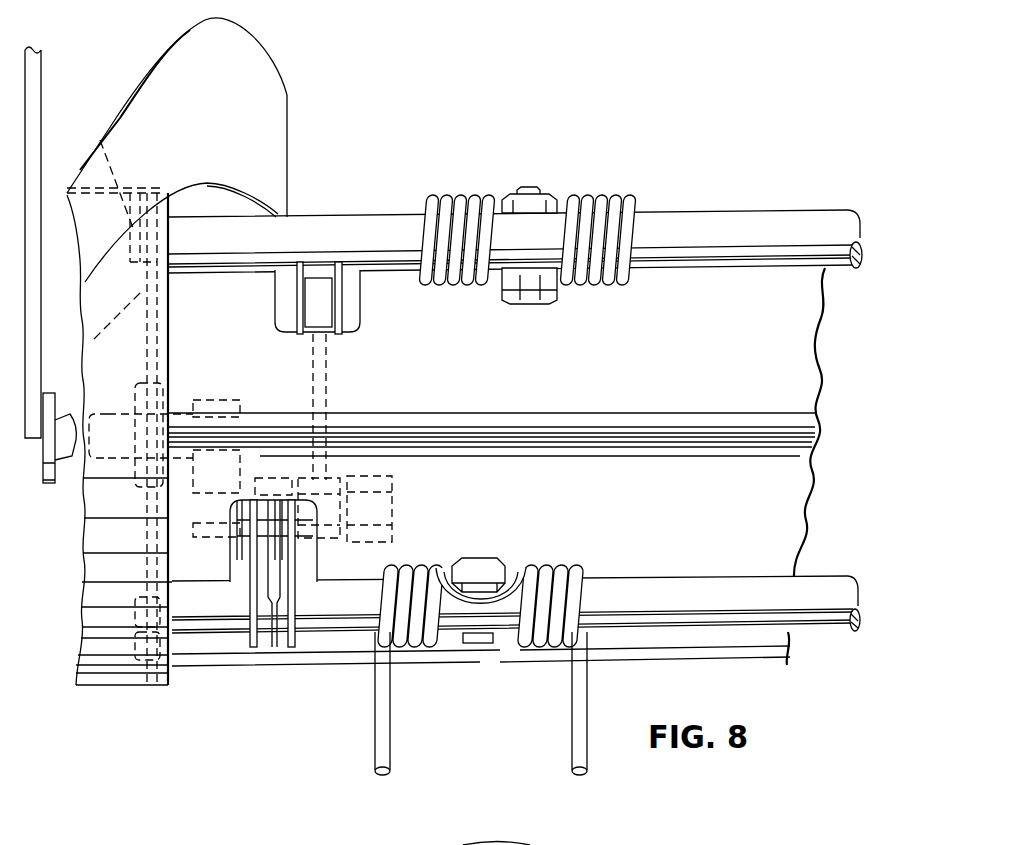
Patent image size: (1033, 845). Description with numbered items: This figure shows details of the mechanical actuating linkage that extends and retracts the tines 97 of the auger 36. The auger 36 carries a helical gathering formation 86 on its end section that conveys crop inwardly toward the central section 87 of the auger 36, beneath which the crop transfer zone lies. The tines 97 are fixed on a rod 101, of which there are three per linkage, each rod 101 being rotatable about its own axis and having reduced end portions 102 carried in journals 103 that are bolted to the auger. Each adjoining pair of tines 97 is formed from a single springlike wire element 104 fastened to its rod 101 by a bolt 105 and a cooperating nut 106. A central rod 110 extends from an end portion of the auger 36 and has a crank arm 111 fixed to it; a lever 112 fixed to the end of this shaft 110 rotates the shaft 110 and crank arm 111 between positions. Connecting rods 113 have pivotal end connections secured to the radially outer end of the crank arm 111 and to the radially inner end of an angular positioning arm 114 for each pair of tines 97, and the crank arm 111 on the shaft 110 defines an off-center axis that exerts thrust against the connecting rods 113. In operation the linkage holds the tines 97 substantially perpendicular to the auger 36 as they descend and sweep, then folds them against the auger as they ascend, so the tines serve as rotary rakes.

The auger 36 is at (262, 58).
The helical gathering formation 86 is at (262, 118).
The central section of the auger 87 is at (682, 290).
The tines 97 is at (392, 745).
The rod 101 is at (800, 220).
The reduced end portion 102 is at (98, 136).
The journal 103 is at (93, 340).
The springlike wire element 104 is at (600, 200).
The bolt 105 is at (535, 304).
The nut 106 is at (545, 195).
The central rod 110 is at (112, 462).
The crank arm 111 is at (241, 404).
The lever 112 is at (41, 72).
The connecting rod 113 is at (356, 378).
The angular positioning arm 114 is at (338, 264).